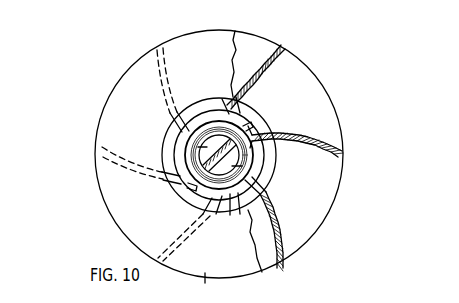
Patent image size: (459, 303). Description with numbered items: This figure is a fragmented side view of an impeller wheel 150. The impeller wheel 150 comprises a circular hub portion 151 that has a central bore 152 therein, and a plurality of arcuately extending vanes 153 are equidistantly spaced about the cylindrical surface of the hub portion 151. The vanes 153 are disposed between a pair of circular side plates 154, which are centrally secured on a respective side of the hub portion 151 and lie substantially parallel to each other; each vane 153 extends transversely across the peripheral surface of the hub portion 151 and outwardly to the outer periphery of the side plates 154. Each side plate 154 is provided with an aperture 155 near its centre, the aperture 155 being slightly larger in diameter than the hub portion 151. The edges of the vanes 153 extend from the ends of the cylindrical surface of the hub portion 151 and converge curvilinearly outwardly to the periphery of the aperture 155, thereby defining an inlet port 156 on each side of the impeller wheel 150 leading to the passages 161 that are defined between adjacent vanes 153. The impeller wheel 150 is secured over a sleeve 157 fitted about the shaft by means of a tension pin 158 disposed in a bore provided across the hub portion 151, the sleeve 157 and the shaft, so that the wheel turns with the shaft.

The impeller wheel 150 is at (89, 124).
The hub portion 151 is at (230, 216).
The central bore 152 is at (215, 127).
The vane 153 is at (275, 50).
The side plate 154 is at (204, 288).
The aperture 155 is at (170, 190).
The inlet port 156 is at (188, 198).
The sleeve 157 is at (240, 160).
The tension pin 158 is at (247, 120).
The passage 161 is at (318, 92).